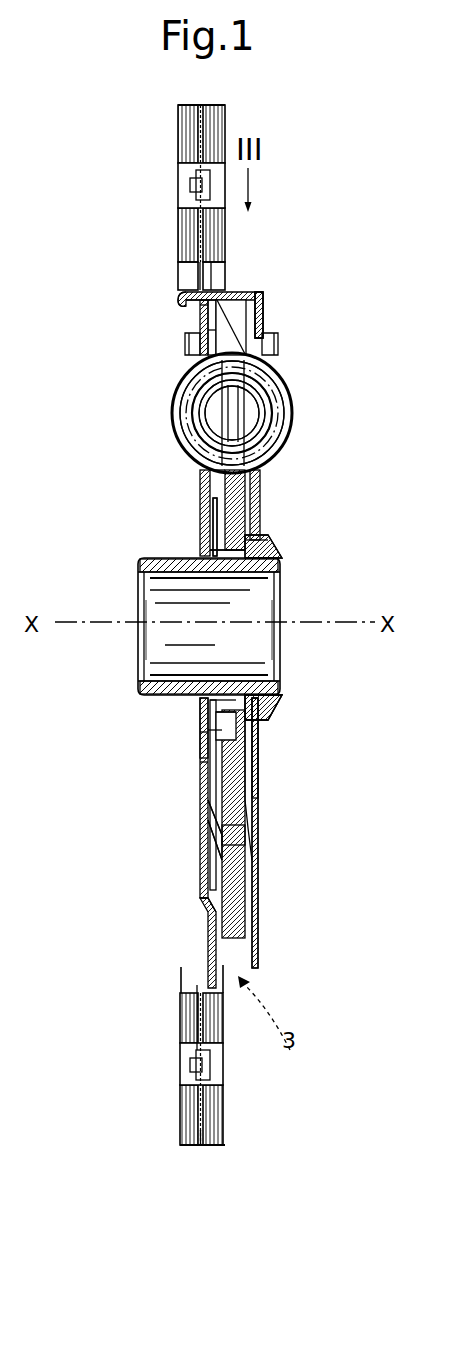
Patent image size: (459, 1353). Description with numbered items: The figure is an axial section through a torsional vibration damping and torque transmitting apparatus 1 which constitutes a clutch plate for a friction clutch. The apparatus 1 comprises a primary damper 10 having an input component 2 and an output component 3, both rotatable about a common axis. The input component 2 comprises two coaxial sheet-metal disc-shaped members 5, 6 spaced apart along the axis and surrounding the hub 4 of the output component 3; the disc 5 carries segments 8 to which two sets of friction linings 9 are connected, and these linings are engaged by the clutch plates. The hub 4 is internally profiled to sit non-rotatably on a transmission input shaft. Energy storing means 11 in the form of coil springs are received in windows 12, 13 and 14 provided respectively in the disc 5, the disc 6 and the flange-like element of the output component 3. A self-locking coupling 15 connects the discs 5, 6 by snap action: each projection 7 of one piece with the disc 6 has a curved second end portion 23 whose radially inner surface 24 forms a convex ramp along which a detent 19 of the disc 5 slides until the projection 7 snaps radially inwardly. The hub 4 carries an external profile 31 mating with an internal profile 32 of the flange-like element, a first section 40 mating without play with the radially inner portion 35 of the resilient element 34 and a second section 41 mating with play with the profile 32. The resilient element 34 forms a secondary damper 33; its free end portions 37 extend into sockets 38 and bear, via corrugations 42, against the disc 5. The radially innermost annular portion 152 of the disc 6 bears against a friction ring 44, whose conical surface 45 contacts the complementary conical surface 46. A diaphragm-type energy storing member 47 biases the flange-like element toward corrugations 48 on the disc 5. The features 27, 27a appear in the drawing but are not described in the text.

The torsional vibration damping and torque transmitting apparatus 1 is at (338, 212).
The input component 2 is at (283, 340).
The output component 3 is at (256, 515).
The hub 4 is at (282, 565).
The disc-shaped member 5 is at (206, 908).
The disc-shaped member 6 is at (258, 912).
The projection 7 is at (232, 292).
The segment 8 is at (203, 1148).
The friction linings 9 is at (190, 1110).
The primary damper 10 is at (304, 411).
The energy storing means 11 is at (268, 388).
The window 12 is at (232, 425).
The window 13 is at (268, 460).
The window 14 is at (215, 447).
The self-locking coupling 15 is at (192, 320).
The second detent 19 is at (212, 335).
The second end portion 23 is at (182, 291).
The radially inner surface 24 is at (200, 300).
The groove 27 is at (258, 298).
The groove 27a is at (259, 315).
The external profile 31 is at (212, 718).
The internal profile 32 is at (232, 548).
The secondary damper 33 is at (196, 737).
The resilient element 34 is at (206, 762).
The radially inner portion 35 is at (206, 535).
The free end portion 37 is at (222, 848).
The socket 38 is at (240, 835).
The first section 40 is at (222, 708).
The second section 41 is at (266, 540).
The corrugations 42 is at (210, 818).
The friction ring 44 is at (240, 712).
The conical surface 45 is at (266, 722).
The complementary conical surface 46 is at (263, 707).
The energy storing member 47 is at (254, 752).
The corrugations 48 is at (206, 882).
The radially innermost annular portion 152 is at (272, 553).